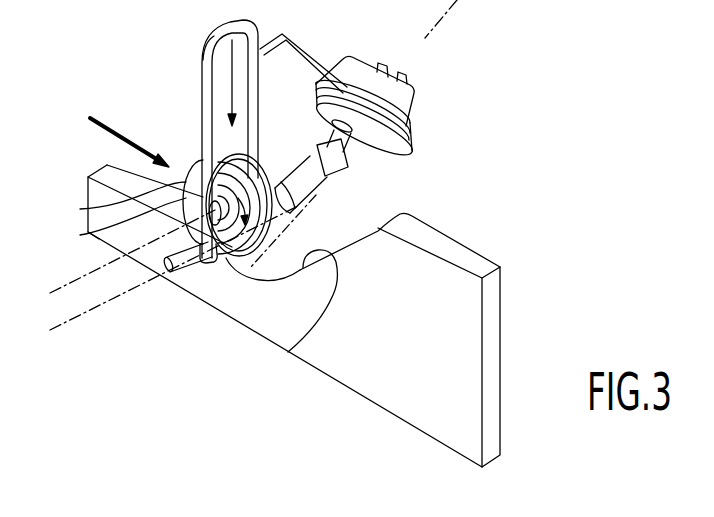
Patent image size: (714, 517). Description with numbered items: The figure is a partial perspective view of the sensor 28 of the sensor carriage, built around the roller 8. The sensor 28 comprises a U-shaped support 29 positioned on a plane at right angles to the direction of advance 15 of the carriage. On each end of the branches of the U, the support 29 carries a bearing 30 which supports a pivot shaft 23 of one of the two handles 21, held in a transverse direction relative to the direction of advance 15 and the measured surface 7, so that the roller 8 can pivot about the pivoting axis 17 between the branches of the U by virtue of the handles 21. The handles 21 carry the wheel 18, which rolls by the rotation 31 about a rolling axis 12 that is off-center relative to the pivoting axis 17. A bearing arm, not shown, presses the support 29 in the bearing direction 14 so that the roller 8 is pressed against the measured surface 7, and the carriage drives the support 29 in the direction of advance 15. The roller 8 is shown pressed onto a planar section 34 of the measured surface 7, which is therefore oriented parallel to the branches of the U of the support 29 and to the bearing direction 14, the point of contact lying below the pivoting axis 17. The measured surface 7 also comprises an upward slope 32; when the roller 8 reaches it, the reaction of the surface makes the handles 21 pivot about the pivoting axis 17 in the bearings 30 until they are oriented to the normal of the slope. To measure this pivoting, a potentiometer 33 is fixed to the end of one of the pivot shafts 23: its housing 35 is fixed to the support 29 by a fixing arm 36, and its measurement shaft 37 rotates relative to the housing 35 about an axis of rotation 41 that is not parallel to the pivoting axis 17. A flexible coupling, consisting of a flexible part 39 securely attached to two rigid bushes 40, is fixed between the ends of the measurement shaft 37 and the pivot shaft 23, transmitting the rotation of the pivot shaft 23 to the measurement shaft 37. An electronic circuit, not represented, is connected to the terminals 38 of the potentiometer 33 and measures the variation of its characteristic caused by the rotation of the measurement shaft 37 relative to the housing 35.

The measured surface 7 is at (475, 258).
The roller 8 is at (187, 150).
The rolling axis 12 is at (104, 268).
The bearing direction 14 is at (243, 35).
The direction of advance 15 is at (125, 135).
The pivoting axis 17 is at (88, 313).
The wheel 18 is at (100, 207).
The handles 21 is at (233, 255).
The pivot shaft 23 is at (178, 272).
The sensor 28 is at (180, 63).
The U-shaped support 29 is at (211, 44).
The bearing 30 is at (207, 263).
The rotation 31 is at (100, 235).
The upward slope 32 is at (288, 352).
The potentiometer 33 is at (422, 90).
The planar section 34 is at (105, 171).
The housing 35 is at (409, 118).
The fixing arm 36 is at (302, 50).
The measurement shaft 37 is at (331, 133).
The terminals 38 is at (385, 60).
The flexible part 39 is at (312, 188).
The rigid bushes 40 is at (338, 166).
The axis of rotation 41 is at (441, 23).